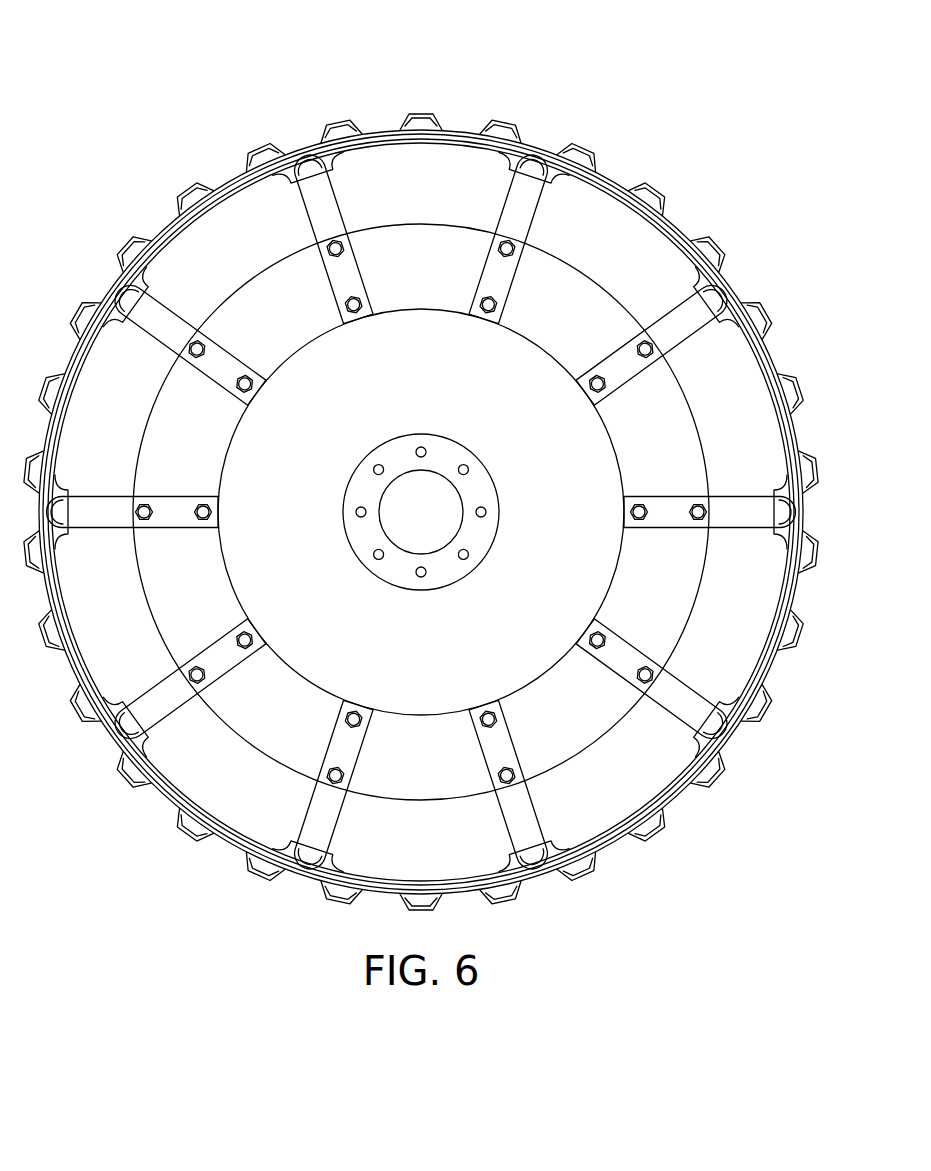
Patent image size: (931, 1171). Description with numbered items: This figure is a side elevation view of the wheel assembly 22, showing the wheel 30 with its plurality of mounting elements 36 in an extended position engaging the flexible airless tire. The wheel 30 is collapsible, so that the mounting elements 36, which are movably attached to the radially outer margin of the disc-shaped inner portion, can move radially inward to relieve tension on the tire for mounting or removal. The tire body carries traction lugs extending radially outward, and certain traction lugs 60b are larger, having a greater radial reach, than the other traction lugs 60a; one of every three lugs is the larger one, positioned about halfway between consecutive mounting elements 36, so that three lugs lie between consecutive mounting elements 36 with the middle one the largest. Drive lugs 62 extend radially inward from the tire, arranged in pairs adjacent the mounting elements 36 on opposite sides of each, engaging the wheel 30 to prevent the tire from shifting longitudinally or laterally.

The wheel assembly 22 is at (113, 118).
The wheel 30 is at (417, 760).
The mounting elements 36 is at (318, 202).
The traction lugs 60a is at (338, 125).
The traction lug 60b is at (421, 113).
The drive lugs 62 is at (343, 154).